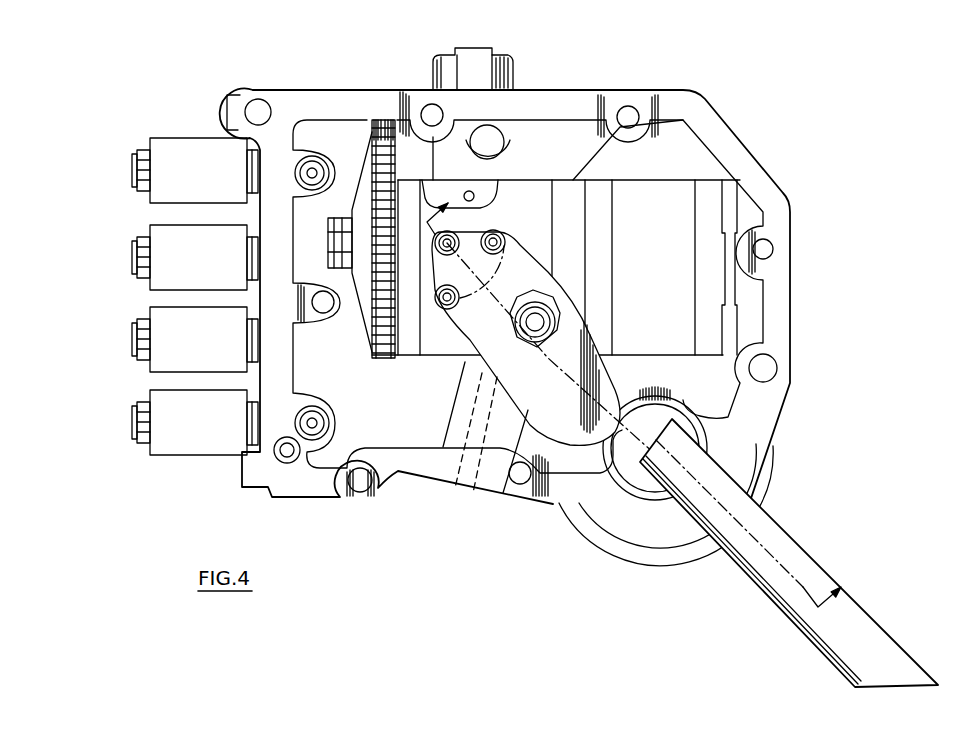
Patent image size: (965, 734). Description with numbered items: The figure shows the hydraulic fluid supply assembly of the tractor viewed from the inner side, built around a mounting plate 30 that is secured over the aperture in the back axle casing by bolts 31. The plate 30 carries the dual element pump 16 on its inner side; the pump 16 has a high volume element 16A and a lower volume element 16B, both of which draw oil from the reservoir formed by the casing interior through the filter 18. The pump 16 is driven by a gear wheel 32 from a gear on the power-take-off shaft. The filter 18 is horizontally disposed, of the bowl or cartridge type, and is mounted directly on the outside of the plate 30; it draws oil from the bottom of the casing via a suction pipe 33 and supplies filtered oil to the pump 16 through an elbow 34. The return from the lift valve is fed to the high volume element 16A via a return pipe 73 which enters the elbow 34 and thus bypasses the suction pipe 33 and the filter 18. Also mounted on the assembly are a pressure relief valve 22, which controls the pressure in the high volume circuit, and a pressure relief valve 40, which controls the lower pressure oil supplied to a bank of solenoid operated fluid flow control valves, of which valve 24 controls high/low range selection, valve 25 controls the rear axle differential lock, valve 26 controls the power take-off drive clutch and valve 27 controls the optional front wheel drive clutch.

The dual element pump 16 is at (660, 333).
The high volume element 16A is at (437, 338).
The lower volume element 16B is at (680, 227).
The filter 18 is at (767, 468).
The pressure relief valve 22 is at (442, 73).
The solenoid operated fluid flow control valve 24 is at (211, 431).
The solenoid operated fluid flow control valve 25 is at (211, 266).
The solenoid operated fluid flow control valve 26 is at (211, 179).
The solenoid operated fluid flow control valve 27 is at (211, 348).
The mounting plate 30 is at (753, 173).
The bolts 31 is at (255, 102).
The gear wheel 32 is at (380, 137).
The suction pipe 33 is at (817, 566).
The elbow 34 is at (480, 472).
The pressure relief valve 40 is at (477, 423).
The return pipe 73 is at (537, 312).